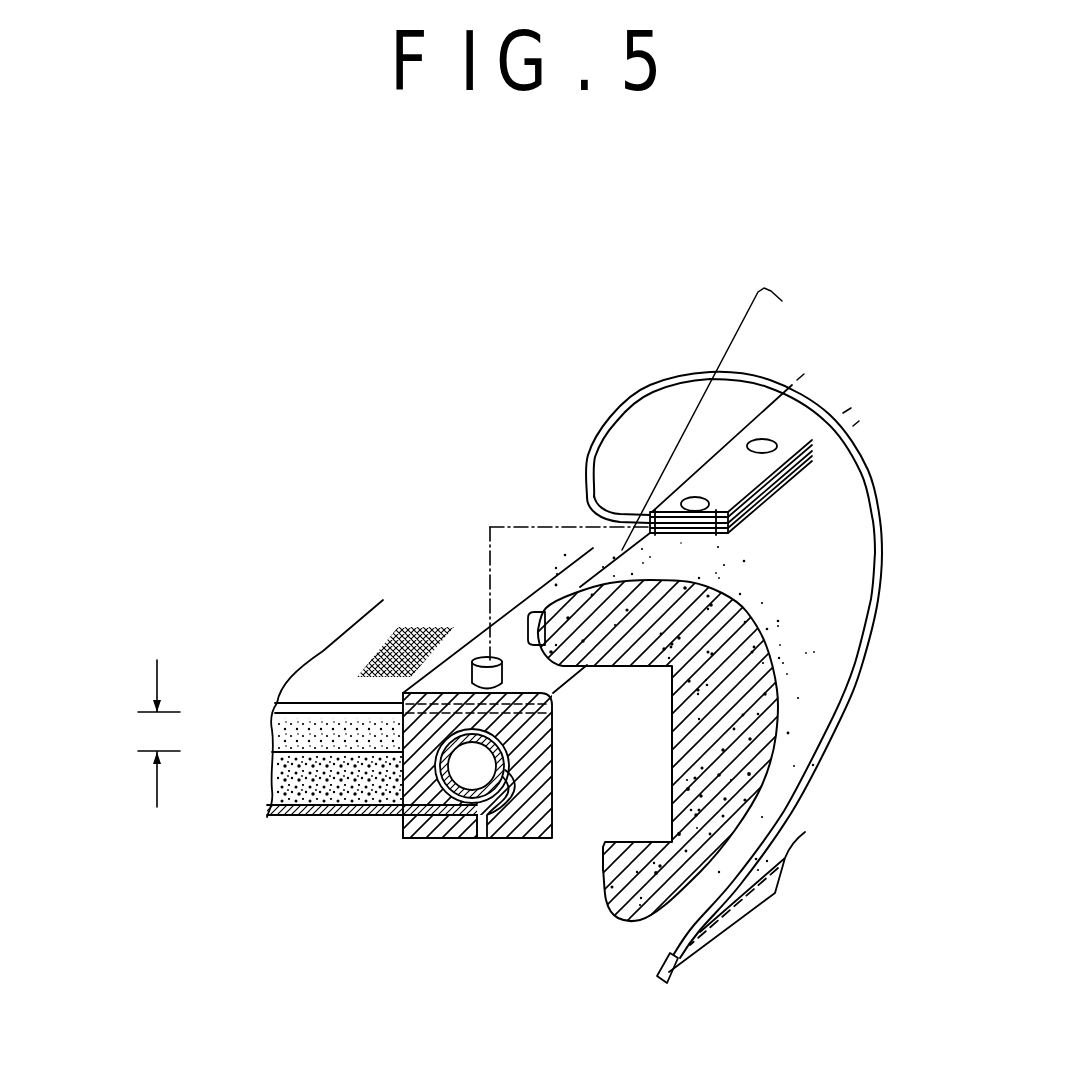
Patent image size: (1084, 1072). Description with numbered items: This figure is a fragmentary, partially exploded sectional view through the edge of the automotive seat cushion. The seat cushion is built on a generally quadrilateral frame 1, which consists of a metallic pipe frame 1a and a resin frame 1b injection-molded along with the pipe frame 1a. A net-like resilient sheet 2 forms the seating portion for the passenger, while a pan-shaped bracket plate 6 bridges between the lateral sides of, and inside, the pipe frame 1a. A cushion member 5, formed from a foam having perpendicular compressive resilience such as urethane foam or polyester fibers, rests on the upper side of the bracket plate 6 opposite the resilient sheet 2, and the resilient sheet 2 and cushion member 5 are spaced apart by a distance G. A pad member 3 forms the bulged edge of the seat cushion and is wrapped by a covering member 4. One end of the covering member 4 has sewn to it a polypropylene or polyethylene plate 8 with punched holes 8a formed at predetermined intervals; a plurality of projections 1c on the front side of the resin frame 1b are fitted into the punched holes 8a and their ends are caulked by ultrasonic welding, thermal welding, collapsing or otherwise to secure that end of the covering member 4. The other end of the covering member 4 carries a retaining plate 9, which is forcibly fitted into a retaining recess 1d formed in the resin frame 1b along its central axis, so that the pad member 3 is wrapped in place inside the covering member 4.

The frame 1 is at (519, 853).
The pipe frame 1a is at (462, 767).
The resin frame 1b is at (423, 832).
The projections 1c is at (497, 660).
The retaining recess 1d is at (478, 840).
The resilient sheet 2 is at (323, 655).
The pad member 3 is at (599, 907).
The covering member 4 is at (700, 337).
The cushion member 5 is at (277, 767).
The bracket plate 6 is at (284, 816).
The plate 8 is at (805, 431).
The punched holes 8a is at (758, 441).
The retaining plate 9 is at (663, 957).
The distance G is at (159, 710).